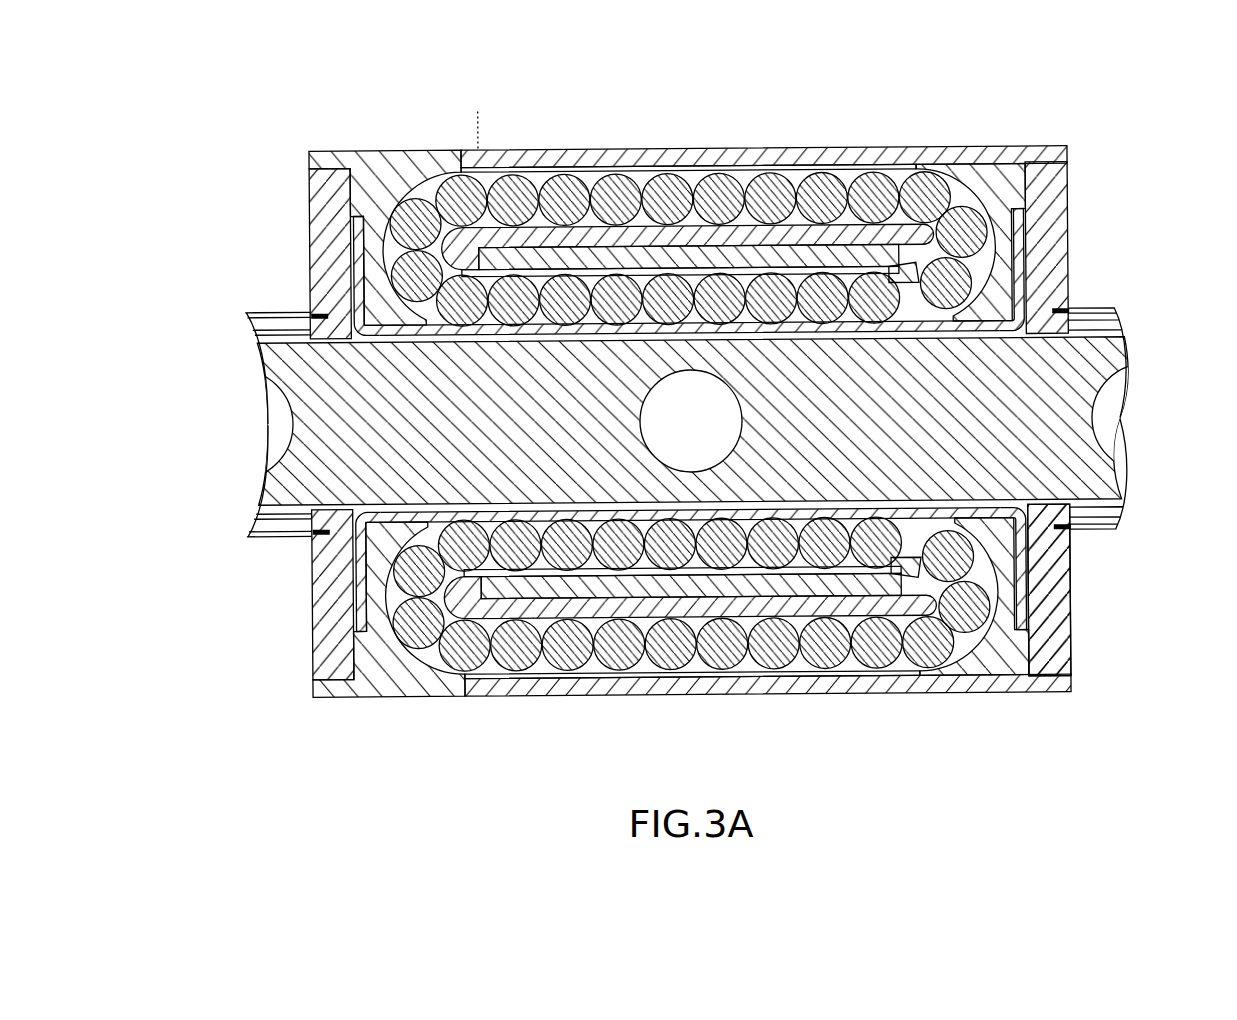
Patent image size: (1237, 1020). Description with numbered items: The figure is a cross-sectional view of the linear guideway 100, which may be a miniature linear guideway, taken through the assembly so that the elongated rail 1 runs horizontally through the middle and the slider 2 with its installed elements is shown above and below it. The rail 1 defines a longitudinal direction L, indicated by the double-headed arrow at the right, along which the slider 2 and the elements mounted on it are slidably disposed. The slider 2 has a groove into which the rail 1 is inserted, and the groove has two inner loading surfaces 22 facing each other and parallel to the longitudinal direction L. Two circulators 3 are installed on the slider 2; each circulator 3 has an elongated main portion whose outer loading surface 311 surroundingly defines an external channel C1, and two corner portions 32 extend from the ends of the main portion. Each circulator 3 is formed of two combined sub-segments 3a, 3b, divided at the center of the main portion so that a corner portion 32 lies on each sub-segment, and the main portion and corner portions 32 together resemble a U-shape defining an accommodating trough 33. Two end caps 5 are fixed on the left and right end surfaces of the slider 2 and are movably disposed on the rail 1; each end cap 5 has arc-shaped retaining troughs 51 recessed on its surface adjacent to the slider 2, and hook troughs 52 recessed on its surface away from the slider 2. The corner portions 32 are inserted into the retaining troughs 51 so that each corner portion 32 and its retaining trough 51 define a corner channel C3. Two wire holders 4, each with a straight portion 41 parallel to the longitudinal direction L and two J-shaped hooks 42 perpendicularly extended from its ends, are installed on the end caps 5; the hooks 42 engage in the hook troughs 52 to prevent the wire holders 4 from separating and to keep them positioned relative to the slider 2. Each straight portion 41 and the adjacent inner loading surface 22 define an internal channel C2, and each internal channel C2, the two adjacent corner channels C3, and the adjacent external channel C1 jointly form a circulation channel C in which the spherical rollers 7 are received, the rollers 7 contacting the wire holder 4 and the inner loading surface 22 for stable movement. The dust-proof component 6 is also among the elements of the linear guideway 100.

The linear guideway 100 is at (243, 83).
The rail 1 is at (1101, 294).
The slider 2 is at (721, 238).
The inner loading surface 22 is at (544, 579).
The circulator 3 is at (692, 654).
The sub-segment 3a is at (730, 748).
The sub-segment 3b is at (725, 690).
The outer loading surface 311 is at (543, 165).
The corner portion 32 is at (471, 688).
The accommodating trough 33 is at (608, 246).
The wire holder 4 is at (600, 549).
The straight portion 41 is at (406, 510).
The J-shaped hook 42 is at (359, 554).
The end cap 5 is at (692, 642).
The retaining trough 51 is at (434, 666).
The hook trough 52 is at (365, 688).
The dust-proof component 6 is at (1084, 591).
The roller 7 is at (883, 678).
The circulation channel C is at (688, 191).
The external channel C1 is at (854, 165).
The internal channel C2 is at (852, 264).
The corner channel C3 is at (825, 97).
The longitudinal direction L is at (1225, 526).